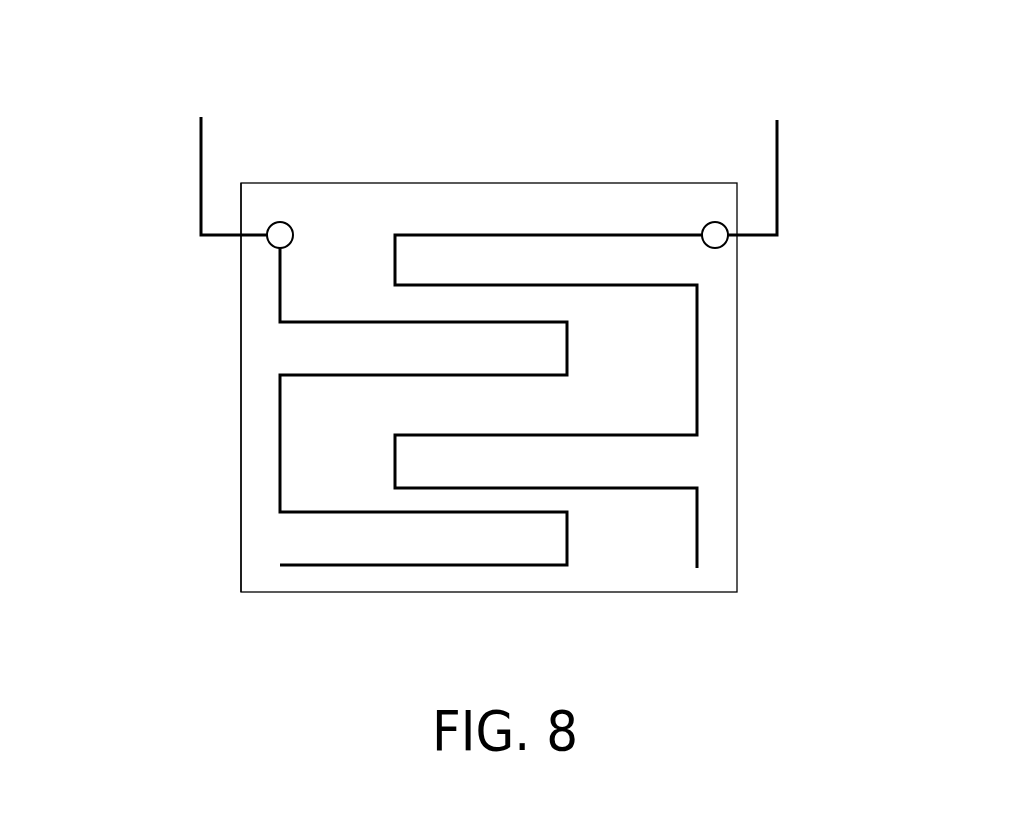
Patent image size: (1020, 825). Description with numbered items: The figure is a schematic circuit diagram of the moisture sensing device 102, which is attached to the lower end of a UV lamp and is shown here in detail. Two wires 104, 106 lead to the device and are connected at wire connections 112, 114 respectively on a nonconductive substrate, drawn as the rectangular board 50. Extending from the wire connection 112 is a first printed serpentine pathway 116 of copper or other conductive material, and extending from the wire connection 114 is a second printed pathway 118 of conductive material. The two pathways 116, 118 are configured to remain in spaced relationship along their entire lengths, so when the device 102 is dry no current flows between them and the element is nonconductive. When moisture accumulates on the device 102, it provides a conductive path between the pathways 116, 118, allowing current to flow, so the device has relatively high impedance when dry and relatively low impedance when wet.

The moisture sensing device 102 is at (525, 162).
The substrate 50 is at (738, 457).
The second printed pathway 118 is at (240, 479).
The first printed serpentine pathway 116 is at (698, 343).
The wire connection 114 is at (280, 222).
The wire connection 112 is at (715, 222).
The wire 106 is at (200, 177).
The wire 104 is at (778, 170).